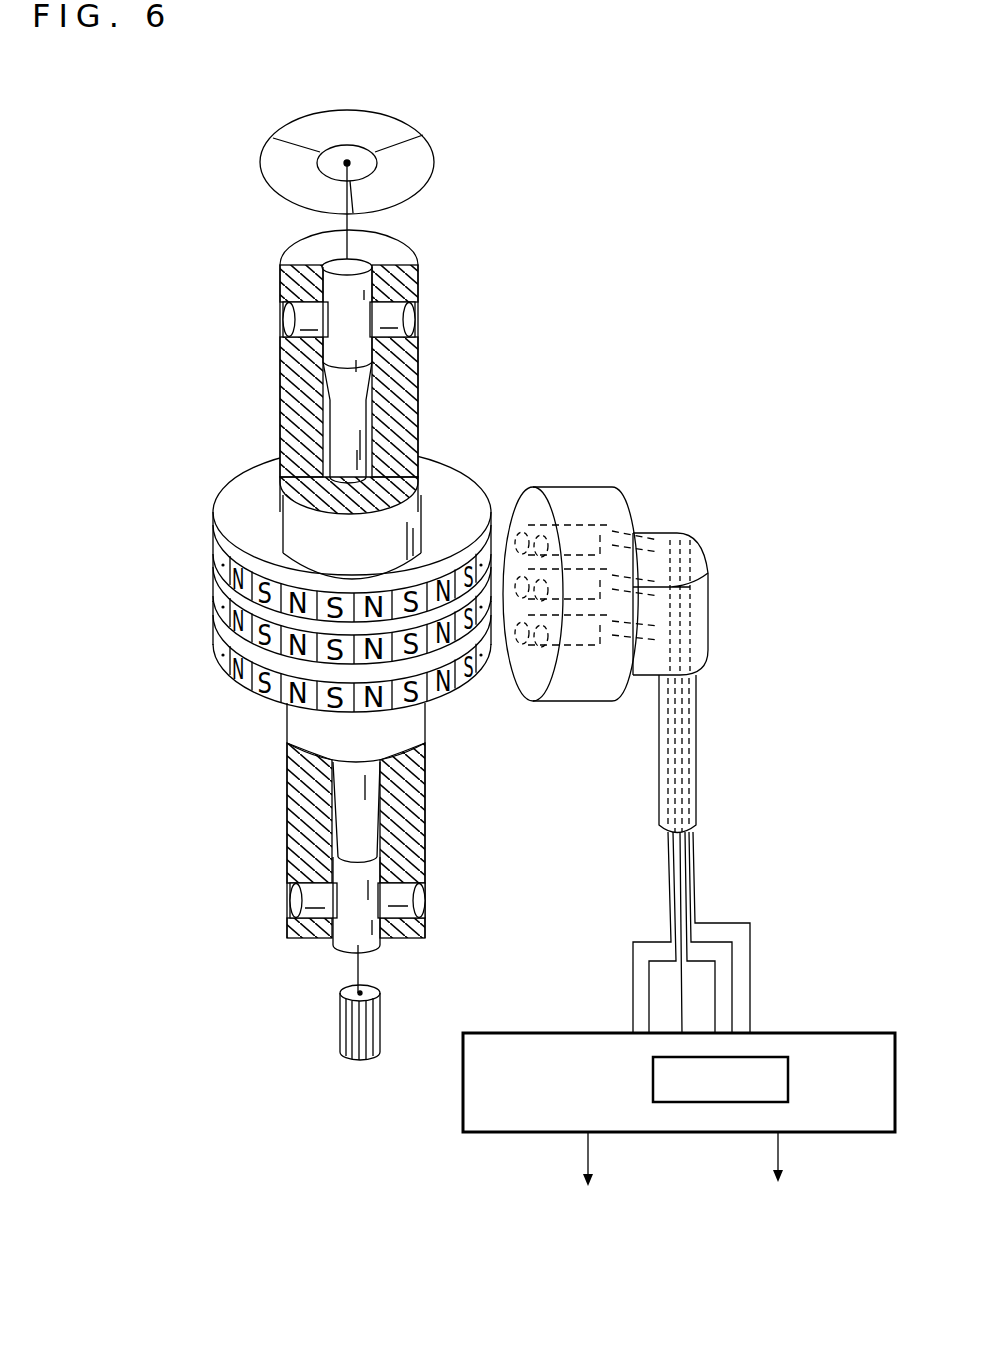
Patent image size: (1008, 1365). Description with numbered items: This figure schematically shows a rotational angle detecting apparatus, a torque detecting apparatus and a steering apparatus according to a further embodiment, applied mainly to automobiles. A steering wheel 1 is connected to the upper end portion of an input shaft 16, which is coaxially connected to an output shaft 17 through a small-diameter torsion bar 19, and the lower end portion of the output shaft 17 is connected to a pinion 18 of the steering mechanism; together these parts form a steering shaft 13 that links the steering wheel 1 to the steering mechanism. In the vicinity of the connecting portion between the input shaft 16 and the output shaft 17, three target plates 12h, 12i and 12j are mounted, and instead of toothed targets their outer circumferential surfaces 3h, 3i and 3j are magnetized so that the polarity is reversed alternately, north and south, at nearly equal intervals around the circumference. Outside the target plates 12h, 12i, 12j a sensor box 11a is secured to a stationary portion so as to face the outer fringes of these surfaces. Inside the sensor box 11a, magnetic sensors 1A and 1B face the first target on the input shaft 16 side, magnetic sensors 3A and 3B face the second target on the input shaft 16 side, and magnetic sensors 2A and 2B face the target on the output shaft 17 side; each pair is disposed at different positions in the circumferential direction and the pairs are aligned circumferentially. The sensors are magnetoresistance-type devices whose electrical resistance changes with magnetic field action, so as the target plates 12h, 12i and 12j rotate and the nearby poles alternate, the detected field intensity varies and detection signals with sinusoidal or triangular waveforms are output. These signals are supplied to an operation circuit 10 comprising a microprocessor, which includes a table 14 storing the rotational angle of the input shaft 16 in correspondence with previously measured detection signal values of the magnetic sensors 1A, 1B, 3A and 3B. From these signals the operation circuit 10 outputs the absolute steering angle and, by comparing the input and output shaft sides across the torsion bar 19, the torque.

The steering wheel 1 is at (403, 120).
The steering shaft 13 is at (432, 348).
The input shaft 16 is at (418, 398).
The output shaft 17 is at (425, 828).
The torsion bar 19 is at (340, 400).
The pinion 18 is at (340, 1018).
The target plate 12h is at (224, 523).
The target plate 12i is at (214, 605).
The target plate 12j is at (243, 685).
The outer circumferential surface 3h is at (216, 573).
The outer circumferential surface 3i is at (217, 660).
The outer circumferential surface 3j is at (470, 696).
The sensor box 11a is at (610, 546).
The magnetic sensor 1A is at (537, 507).
The magnetic sensor 1B is at (510, 517).
The magnetic sensor 2A is at (706, 648).
The magnetic sensor 2B is at (708, 622).
The magnetic sensor 3A is at (710, 590).
The magnetic sensor 3B is at (708, 568).
The operation circuit 10 is at (652, 1054).
The table 14 is at (790, 1078).